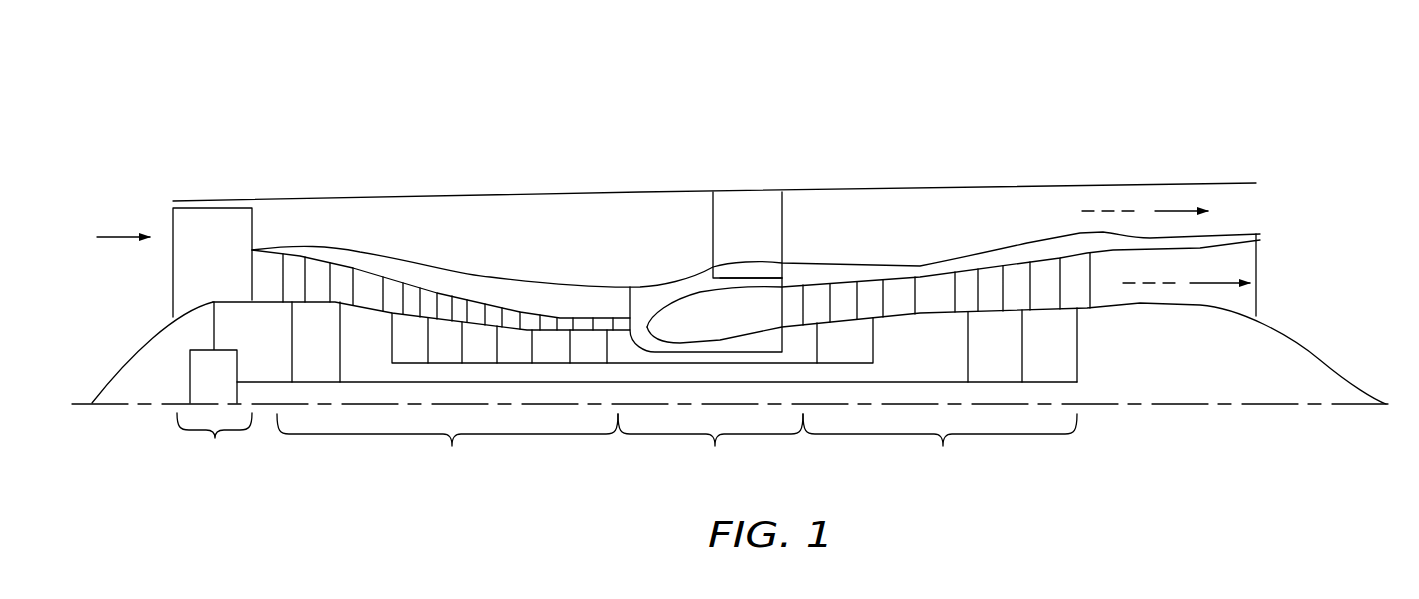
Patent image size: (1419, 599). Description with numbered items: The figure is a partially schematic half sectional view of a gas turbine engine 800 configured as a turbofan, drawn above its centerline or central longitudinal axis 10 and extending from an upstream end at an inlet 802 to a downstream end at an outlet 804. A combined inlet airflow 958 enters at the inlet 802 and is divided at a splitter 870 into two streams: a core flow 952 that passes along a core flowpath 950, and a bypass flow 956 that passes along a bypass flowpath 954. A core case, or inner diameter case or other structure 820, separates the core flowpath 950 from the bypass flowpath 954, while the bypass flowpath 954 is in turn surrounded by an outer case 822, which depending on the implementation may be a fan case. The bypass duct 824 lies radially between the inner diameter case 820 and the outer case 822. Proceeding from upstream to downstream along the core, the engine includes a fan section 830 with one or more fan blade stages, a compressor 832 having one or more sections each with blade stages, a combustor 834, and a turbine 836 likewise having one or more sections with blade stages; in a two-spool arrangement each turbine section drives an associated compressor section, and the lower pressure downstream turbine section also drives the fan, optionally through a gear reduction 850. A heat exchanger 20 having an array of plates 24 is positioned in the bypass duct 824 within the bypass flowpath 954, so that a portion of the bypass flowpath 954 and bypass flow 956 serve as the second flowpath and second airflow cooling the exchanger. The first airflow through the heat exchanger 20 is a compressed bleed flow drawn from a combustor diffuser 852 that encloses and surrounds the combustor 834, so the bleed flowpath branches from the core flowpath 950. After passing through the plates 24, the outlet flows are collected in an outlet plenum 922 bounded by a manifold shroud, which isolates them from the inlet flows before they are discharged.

The gas turbine engine 800 is at (246, 123).
The central longitudinal axis 10 is at (1350, 405).
The outer case 822 is at (313, 200).
The combined inlet airflow 958 is at (124, 237).
The inlet 802 is at (163, 268).
The splitter 870 is at (249, 250).
The bypass duct 824 is at (430, 240).
The core case 820 is at (488, 281).
The combustor diffuser 852 is at (673, 292).
The heat exchanger 20 is at (800, 206).
The plates 24 is at (748, 217).
The outlet plenum 922 is at (762, 267).
The bypass flowpath 954 is at (1118, 210).
The bypass flow 956 is at (1182, 207).
The core flowpath 950 is at (1157, 285).
The core flow 952 is at (1221, 285).
The outlet 804 is at (1293, 280).
The gear reduction 850 is at (200, 378).
The fan section 830 is at (214, 443).
The compressor 832 is at (575, 392).
The combustor 834 is at (717, 403).
The turbine 836 is at (940, 395).